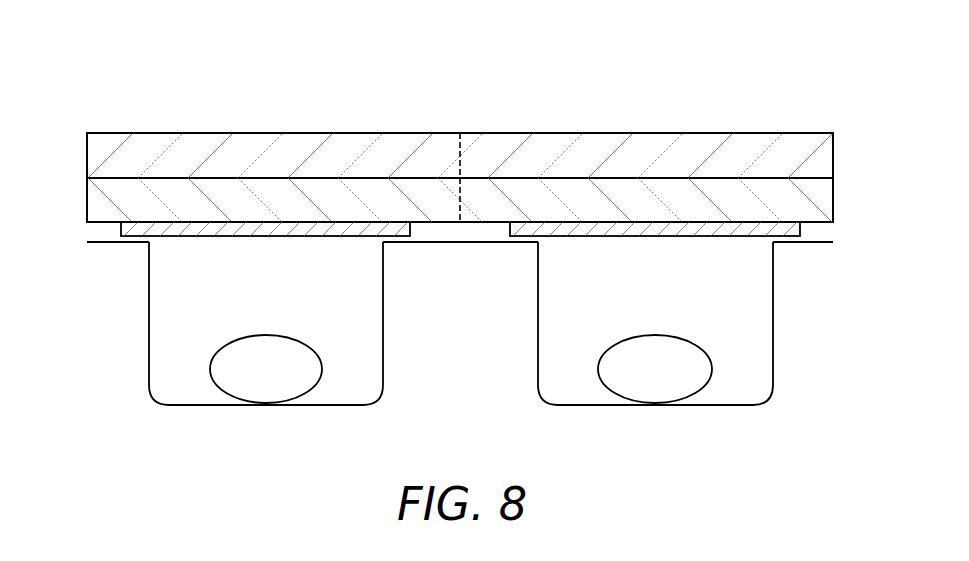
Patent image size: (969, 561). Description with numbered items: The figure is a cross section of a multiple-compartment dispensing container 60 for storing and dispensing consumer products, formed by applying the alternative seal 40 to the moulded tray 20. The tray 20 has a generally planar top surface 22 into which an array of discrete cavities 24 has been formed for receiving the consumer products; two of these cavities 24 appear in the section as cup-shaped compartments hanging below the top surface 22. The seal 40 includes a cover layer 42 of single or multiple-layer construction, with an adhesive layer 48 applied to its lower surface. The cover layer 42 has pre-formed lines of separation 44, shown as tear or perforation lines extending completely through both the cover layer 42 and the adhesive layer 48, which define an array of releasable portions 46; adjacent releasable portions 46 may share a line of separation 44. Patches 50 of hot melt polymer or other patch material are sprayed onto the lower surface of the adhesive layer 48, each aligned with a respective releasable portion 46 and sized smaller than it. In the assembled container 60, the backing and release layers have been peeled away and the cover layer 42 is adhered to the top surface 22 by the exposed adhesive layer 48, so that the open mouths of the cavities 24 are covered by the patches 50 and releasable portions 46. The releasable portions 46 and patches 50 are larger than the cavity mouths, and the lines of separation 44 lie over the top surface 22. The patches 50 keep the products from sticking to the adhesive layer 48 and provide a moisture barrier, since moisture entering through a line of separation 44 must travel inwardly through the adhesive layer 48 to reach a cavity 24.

The moulded tray 20 is at (460, 370).
The generally planar top surface 22 is at (460, 243).
The discrete cavities 24 is at (344, 388).
The alternative seal 40 is at (172, 72).
The cover layer 42 is at (790, 142).
The lines of separation 44 is at (460, 148).
The releasable portions 46 is at (267, 140).
The adhesive layer 48 is at (826, 198).
The patches 50 is at (267, 228).
The container 60 is at (94, 335).